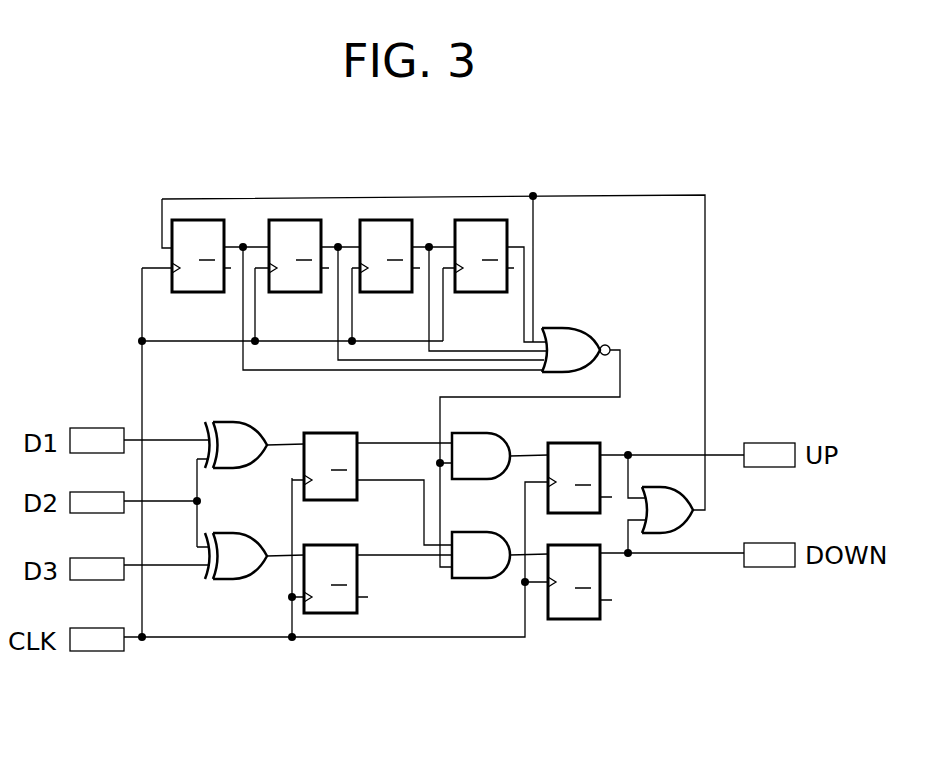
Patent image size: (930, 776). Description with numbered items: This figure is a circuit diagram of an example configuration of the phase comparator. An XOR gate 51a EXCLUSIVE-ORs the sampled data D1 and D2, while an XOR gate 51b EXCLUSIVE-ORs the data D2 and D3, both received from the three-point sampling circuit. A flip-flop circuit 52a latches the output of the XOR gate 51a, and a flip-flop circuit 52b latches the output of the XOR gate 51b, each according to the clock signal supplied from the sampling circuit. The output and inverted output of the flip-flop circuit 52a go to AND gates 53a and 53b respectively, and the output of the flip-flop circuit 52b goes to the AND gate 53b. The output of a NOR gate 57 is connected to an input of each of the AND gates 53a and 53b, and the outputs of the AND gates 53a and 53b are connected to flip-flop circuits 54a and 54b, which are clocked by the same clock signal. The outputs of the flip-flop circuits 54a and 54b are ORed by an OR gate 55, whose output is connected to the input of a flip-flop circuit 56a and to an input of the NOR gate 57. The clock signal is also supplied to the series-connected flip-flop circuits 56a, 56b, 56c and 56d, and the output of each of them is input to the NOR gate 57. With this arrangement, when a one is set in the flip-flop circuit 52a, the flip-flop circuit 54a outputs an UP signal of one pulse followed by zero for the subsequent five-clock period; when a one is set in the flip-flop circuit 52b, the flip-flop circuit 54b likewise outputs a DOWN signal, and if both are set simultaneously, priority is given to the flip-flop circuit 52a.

The XOR gate 51a is at (238, 424).
The XOR gate 51b is at (238, 533).
The flip-flop circuit 52a is at (333, 433).
The flip-flop circuit 52b is at (333, 545).
The AND gate 53a is at (500, 434).
The AND gate 53b is at (481, 579).
The flip-flop circuit 54a is at (575, 443).
The flip-flop circuit 54b is at (590, 620).
The OR gate 55 is at (695, 522).
The flip-flop circuit 56a is at (188, 293).
The flip-flop circuit 56b is at (285, 293).
The flip-flop circuit 56c is at (378, 293).
The flip-flop circuit 56d is at (468, 293).
The NOR gate 57 is at (570, 327).